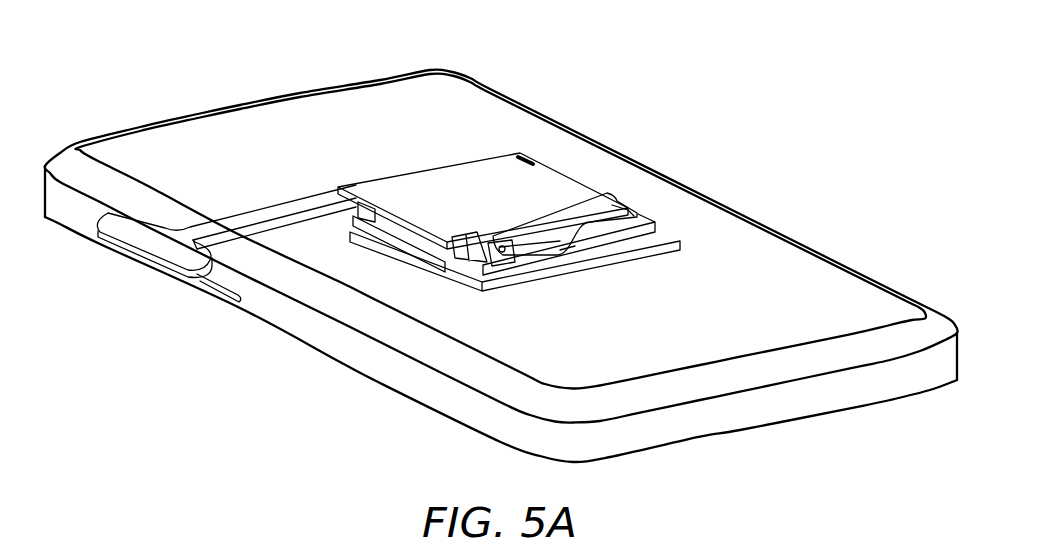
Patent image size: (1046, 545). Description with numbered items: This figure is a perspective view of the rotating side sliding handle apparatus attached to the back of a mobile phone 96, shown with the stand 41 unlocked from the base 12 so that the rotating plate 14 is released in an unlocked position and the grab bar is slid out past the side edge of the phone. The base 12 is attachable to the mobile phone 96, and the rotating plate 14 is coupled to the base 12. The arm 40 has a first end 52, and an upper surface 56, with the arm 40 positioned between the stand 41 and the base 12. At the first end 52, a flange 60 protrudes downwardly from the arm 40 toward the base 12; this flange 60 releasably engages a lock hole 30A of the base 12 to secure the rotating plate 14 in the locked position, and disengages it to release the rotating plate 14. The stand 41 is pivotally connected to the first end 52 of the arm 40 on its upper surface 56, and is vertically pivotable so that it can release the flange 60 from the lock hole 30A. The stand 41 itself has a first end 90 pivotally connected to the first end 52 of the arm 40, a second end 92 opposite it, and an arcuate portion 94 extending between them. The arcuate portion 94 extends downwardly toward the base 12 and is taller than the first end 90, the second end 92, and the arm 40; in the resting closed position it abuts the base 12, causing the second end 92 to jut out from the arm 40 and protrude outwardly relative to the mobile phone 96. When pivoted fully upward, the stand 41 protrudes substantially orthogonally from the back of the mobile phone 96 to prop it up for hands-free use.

The base 12 is at (670, 247).
The rotating plate 14 is at (560, 168).
The lock hole 30A is at (472, 267).
The arm 40 is at (623, 237).
The stand 41 is at (523, 220).
The first end 52 is at (462, 230).
The upper surface 56 is at (610, 207).
The flange 60 is at (510, 272).
The first end 90 is at (516, 247).
The second end 92 is at (613, 197).
The arcuate portion 94 is at (562, 250).
The mobile phone 96 is at (303, 120).